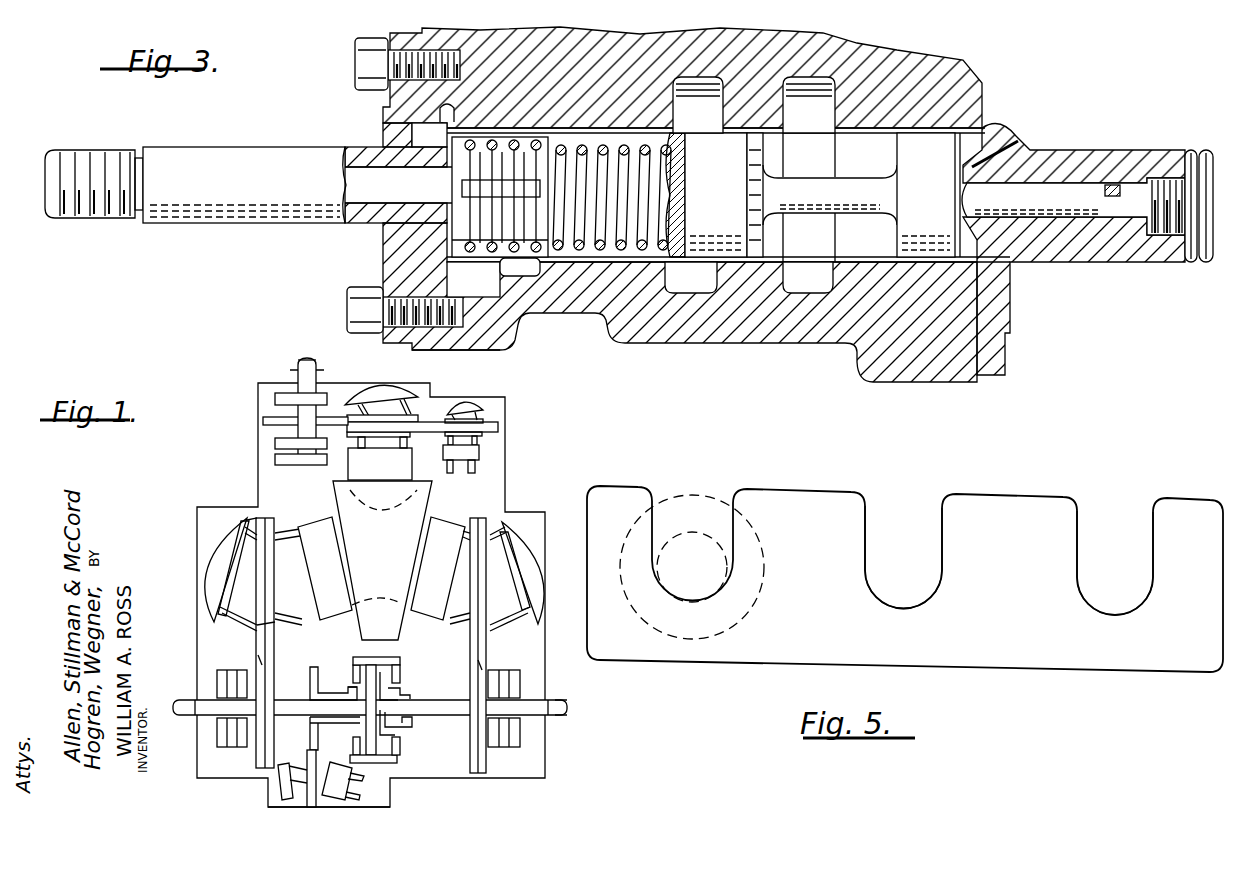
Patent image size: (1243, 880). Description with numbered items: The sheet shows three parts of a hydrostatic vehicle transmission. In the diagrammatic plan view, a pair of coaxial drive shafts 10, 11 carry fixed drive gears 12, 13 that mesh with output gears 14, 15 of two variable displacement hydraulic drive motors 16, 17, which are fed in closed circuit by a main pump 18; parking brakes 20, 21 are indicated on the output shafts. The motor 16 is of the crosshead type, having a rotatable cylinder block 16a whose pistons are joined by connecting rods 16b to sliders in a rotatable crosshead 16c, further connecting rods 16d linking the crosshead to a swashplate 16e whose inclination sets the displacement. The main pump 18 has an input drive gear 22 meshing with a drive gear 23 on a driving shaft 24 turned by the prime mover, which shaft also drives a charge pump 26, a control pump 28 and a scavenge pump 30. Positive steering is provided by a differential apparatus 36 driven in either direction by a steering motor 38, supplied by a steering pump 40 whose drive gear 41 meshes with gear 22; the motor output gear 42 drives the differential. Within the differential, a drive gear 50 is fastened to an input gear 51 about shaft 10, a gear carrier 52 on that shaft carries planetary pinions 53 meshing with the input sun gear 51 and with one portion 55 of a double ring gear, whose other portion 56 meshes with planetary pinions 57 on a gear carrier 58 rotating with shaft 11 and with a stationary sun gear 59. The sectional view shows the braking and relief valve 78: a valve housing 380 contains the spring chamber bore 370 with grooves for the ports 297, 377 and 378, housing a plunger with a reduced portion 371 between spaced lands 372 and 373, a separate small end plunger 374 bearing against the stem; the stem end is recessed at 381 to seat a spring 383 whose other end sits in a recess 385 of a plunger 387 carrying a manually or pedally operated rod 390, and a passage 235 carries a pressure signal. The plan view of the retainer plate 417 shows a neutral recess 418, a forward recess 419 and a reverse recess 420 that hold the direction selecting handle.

In FIG. 3, the braking and high pressure relief valve 78 is at (932, 337).
In FIG. 3, the stem or rod portion 390 is at (252, 162).
In FIG. 3, the spring chamber bore 370 is at (585, 128).
In FIG. 3, the recess 385 is at (462, 128).
In FIG. 3, the plunger 387 is at (496, 268).
In FIG. 3, the passage 297 is at (525, 277).
In FIG. 3, the spring 383 is at (570, 128).
In FIG. 3, the recess 381 is at (685, 152).
In FIG. 3, the land 372 is at (725, 192).
In FIG. 3, the reduced stem portion 371 is at (856, 215).
In FIG. 3, the land 373 is at (938, 180).
In FIG. 3, the passage 377 is at (700, 77).
In FIG. 3, the passage 378 is at (800, 296).
In FIG. 3, the valve housing 380 is at (700, 330).
In FIG. 3, the end stem plunger 374 is at (1047, 190).
In FIG. 3, the passage 235 is at (1113, 186).
In FIG. 1, the parking brake 20 is at (230, 760).
In FIG. 1, the parking brake 21 is at (504, 762).
In FIG. 1, the drive shaft 10 is at (172, 700).
In FIG. 1, the drive shaft 11 is at (567, 708).
In FIG. 1, the drive gear 12 is at (258, 660).
In FIG. 1, the drive gear 13 is at (482, 666).
In FIG. 1, the output gear 14 is at (275, 508).
In FIG. 1, the output gear 15 is at (478, 518).
In FIG. 1, the hydraulic drive motor 16 is at (232, 521).
In FIG. 1, the rotatable cylinder block 16a is at (313, 518).
In FIG. 1, the connecting rods 16b is at (290, 612).
In FIG. 1, the rotatable crosshead 16c is at (275, 627).
In FIG. 1, the connecting rods 16d is at (238, 618).
In FIG. 1, the swashplate or cam plate 16e is at (210, 568).
In FIG. 1, the hydraulic drive motor 17 is at (524, 529).
In FIG. 1, the main pump 18 is at (422, 406).
In FIG. 1, the input drive gear 22 is at (347, 418).
In FIG. 1, the drive gear 23 is at (265, 418).
In FIG. 1, the driving shaft 24 is at (300, 360).
In FIG. 1, the charge pump 26 is at (273, 443).
In FIG. 1, the control pump 28 is at (273, 459).
In FIG. 1, the scavenge pump 30 is at (282, 388).
In FIG. 1, the steering pump 40 is at (489, 411).
In FIG. 1, the drive gear 41 is at (500, 427).
In FIG. 1, the drive gear 50 is at (310, 672).
In FIG. 1, the input gear 51 is at (349, 690).
In FIG. 1, the gear carrier 52 is at (373, 660).
In FIG. 1, the planetary pinions 53 is at (353, 670).
In FIG. 1, the ring gear portion 55 is at (360, 656).
In FIG. 1, the ring gear portion 56 is at (385, 672).
In FIG. 1, the planetary pinions 57 is at (400, 672).
In FIG. 1, the gear carrier 58 is at (401, 690).
In FIG. 1, the stationary sun gear 59 is at (412, 699).
In FIG. 1, the differential apparatus 36 is at (396, 774).
In FIG. 1, the steering motor 38 is at (332, 816).
In FIG. 1, the output gear 42 is at (308, 803).
In FIG. 5, the retainer plate 417 is at (756, 650).
In FIG. 5, the recess 418 is at (942, 536).
In FIG. 5, the recess 419 is at (735, 533).
In FIG. 5, the recess 420 is at (1077, 562).